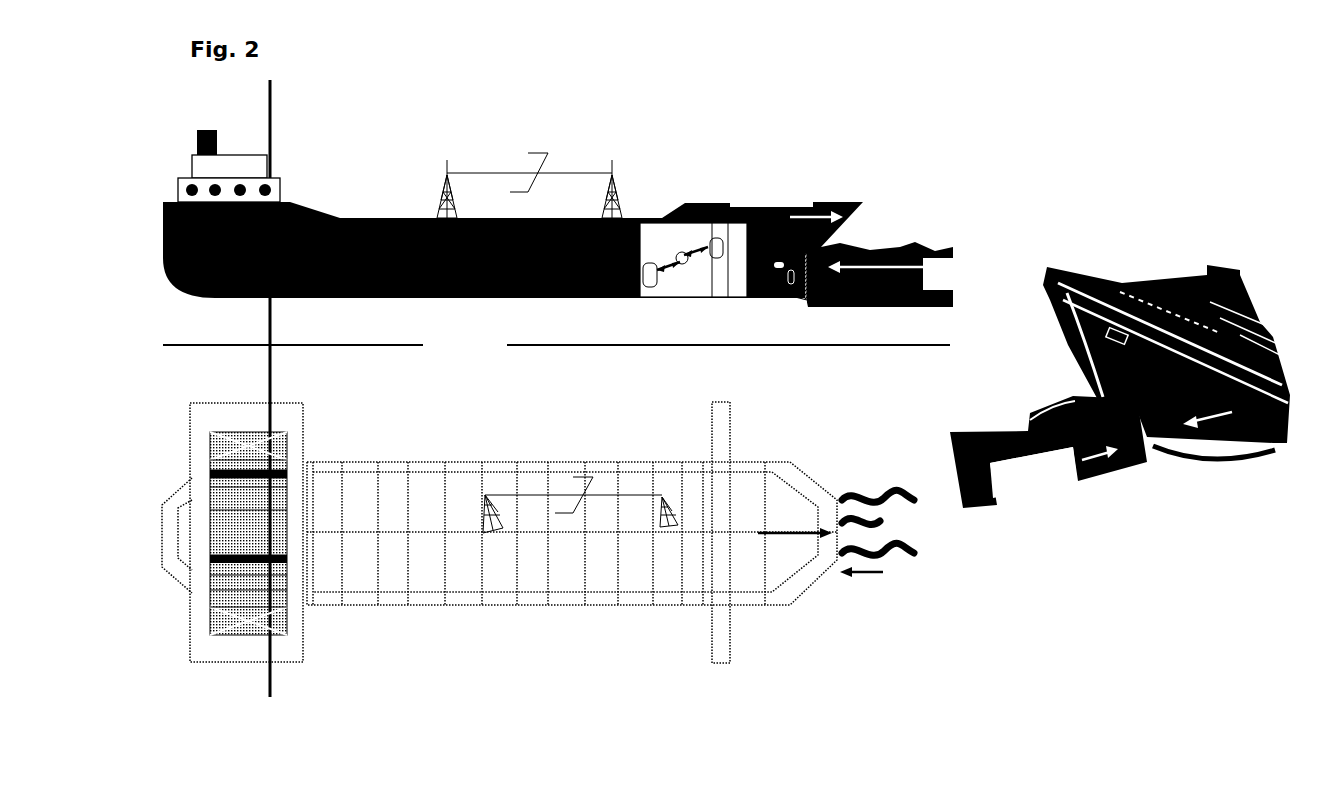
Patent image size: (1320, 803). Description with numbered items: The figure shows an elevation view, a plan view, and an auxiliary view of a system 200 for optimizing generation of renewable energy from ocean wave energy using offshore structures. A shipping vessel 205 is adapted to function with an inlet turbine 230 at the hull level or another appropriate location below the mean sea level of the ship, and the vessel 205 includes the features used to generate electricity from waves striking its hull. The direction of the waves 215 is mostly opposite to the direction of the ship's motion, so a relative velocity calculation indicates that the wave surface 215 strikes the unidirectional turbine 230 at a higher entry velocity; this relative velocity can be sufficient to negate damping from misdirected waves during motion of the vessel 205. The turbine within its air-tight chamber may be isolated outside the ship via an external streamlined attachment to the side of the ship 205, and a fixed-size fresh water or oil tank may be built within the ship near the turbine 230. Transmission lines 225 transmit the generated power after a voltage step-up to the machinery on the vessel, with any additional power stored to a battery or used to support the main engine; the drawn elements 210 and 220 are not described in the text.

The system 200 is at (992, 60).
The shipping vessel 205 is at (726, 396).
The incoming water flow 210 is at (973, 433).
The waves 215 is at (995, 383).
The mast 220 is at (485, 495).
The transmission lines 225 is at (488, 188).
The inlet turbine 230 is at (783, 255).